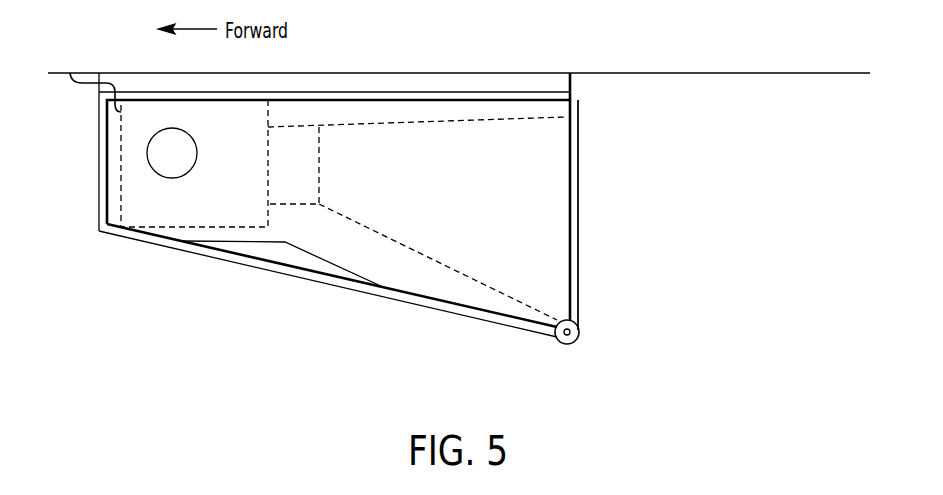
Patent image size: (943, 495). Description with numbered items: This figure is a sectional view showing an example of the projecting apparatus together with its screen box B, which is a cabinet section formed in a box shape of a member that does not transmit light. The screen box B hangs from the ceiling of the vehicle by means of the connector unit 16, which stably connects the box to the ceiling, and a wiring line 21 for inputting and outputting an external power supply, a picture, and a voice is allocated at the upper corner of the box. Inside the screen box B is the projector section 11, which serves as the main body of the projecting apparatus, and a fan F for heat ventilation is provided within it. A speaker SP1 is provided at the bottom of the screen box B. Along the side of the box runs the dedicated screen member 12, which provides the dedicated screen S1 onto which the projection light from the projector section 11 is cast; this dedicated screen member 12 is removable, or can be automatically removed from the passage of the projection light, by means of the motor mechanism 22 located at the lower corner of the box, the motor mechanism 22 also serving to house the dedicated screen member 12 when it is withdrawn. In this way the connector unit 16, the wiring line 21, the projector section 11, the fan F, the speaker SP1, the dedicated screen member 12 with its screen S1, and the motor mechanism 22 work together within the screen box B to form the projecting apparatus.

The wiring line 21 is at (77, 85).
The connector unit 16 is at (558, 84).
The projector section 11 is at (190, 213).
The dedicated screen member 12 is at (573, 257).
The dedicated screen S1 is at (580, 172).
The screen box B is at (323, 279).
The fan F is at (167, 165).
The speaker SP1 is at (263, 255).
The motor mechanism 22 is at (575, 346).